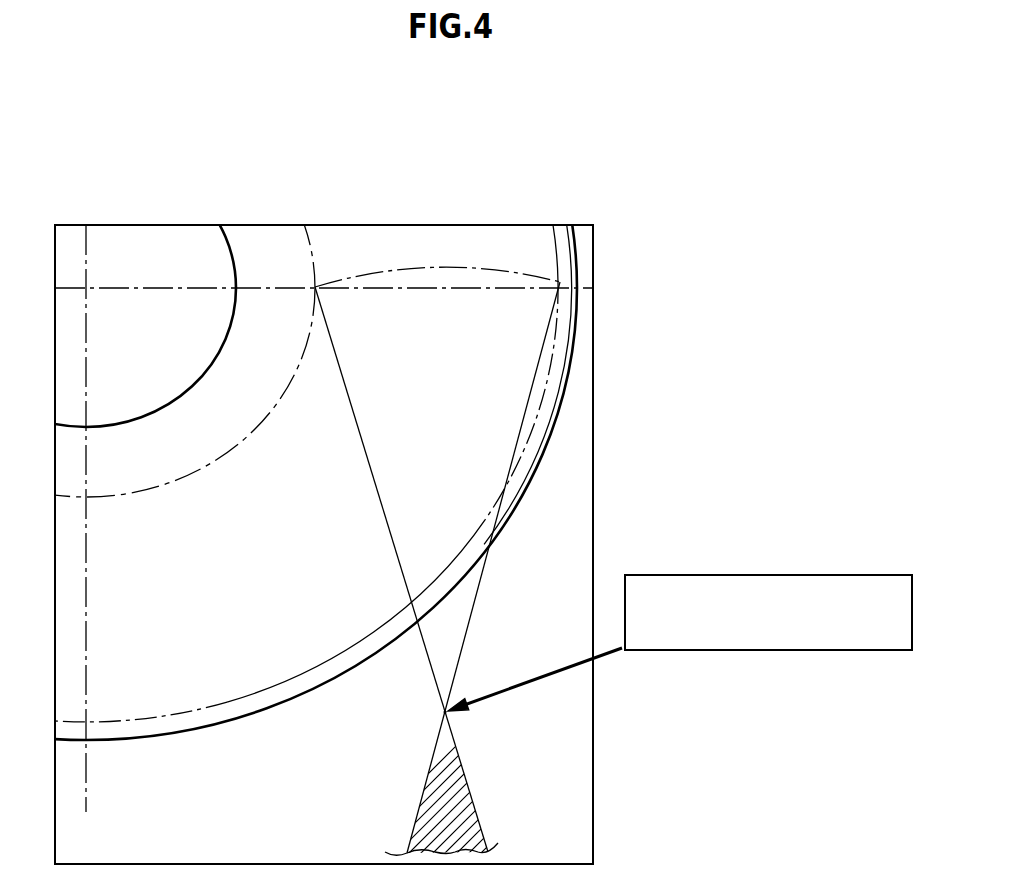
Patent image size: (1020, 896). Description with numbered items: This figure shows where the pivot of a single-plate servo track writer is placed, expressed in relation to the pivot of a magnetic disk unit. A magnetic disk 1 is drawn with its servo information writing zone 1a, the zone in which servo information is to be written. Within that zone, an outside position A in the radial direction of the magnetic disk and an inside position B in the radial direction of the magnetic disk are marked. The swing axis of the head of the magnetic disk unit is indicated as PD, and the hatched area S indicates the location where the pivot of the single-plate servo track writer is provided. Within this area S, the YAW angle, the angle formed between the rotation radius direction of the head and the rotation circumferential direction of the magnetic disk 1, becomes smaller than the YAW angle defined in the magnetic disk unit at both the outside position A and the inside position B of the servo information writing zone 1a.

The magnetic disk 1 is at (548, 460).
The servo information writing zone 1a is at (482, 397).
The outside position A is at (560, 282).
The inside position B is at (315, 287).
The swing axis of the head of the magnetic disk unit PD is at (445, 712).
The area for the position of the pivot S is at (498, 843).